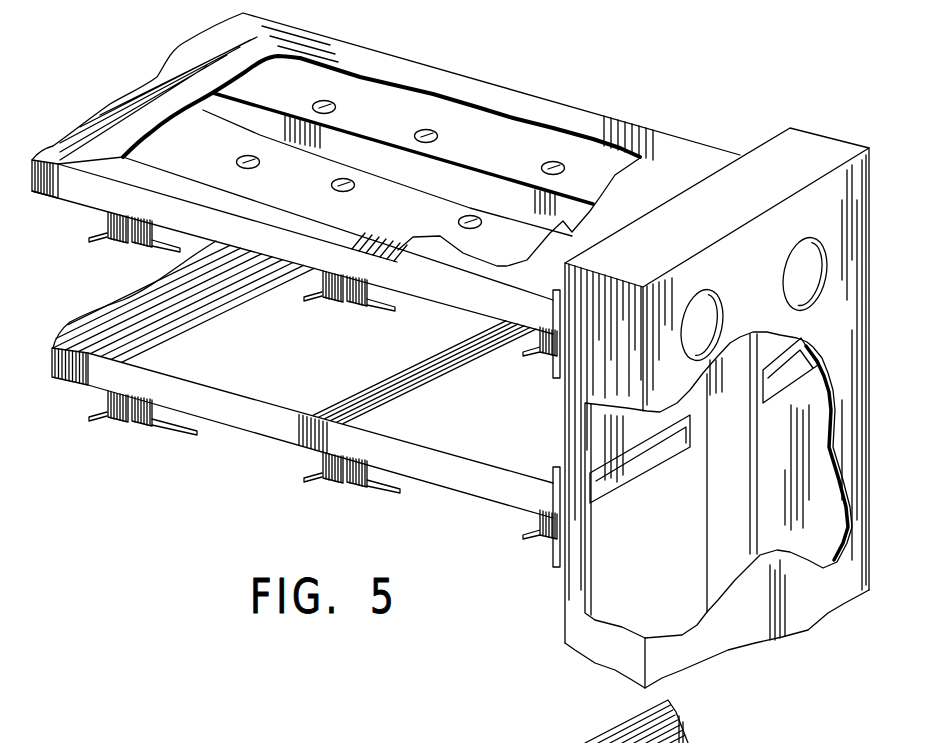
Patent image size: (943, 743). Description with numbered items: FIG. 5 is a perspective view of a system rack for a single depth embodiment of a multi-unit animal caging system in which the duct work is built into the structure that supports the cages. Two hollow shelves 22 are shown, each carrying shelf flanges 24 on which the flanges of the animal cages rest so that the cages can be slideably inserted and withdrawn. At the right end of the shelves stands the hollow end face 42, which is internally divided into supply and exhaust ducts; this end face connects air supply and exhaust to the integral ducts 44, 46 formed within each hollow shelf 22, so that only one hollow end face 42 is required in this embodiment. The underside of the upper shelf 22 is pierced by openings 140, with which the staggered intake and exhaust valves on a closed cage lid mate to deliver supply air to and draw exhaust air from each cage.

The hollow shelf 22 is at (235, 231).
The shelf flange 24 is at (130, 251).
The end face 42 is at (718, 633).
The integral duct 44 is at (420, 225).
The integral duct 46 is at (566, 163).
The opening 140 is at (545, 164).